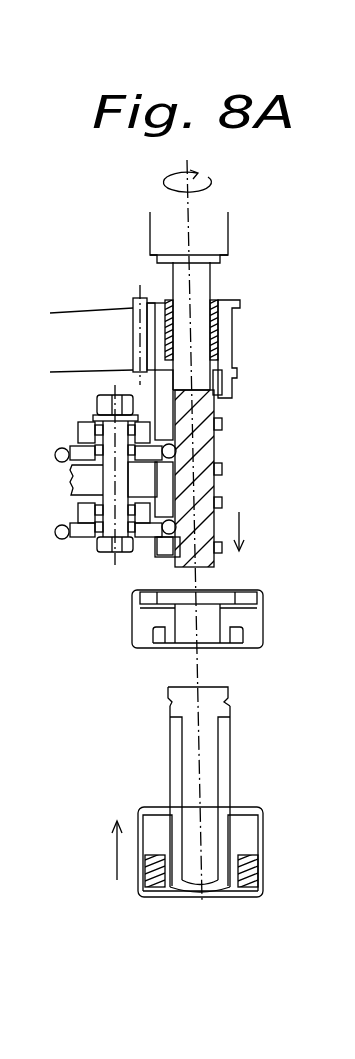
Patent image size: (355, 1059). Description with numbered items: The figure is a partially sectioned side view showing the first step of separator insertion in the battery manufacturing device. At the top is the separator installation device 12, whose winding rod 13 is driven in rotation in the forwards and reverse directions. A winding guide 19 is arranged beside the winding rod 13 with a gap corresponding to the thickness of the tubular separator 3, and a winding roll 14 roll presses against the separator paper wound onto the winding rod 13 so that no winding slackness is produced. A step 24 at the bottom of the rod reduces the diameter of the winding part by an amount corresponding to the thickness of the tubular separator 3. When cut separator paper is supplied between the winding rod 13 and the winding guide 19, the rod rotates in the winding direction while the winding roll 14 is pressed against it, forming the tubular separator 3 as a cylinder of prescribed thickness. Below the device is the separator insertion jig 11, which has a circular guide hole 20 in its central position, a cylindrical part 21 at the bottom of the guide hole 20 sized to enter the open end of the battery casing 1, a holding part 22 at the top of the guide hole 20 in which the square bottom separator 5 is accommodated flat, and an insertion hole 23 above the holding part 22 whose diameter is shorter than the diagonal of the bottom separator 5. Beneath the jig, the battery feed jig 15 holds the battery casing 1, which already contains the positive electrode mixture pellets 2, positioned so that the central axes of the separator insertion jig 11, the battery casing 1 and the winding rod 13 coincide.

The battery casing 1 is at (228, 693).
The positive electrode mixture pellets 2 is at (232, 750).
The tubular separator 3 is at (214, 445).
The bottom separator 5 is at (237, 591).
The separator insertion jig 11 is at (128, 622).
The separator installation device 12 is at (86, 407).
The winding rod 13 is at (205, 388).
The winding roll 14 is at (88, 538).
The battery feed jig 15 is at (266, 840).
The winding guide 19 is at (222, 499).
The guide hole 20 is at (220, 612).
The cylindrical part 21 is at (150, 645).
The holding part 22 is at (258, 603).
The insertion hole 23 is at (230, 592).
The step 24 is at (222, 402).